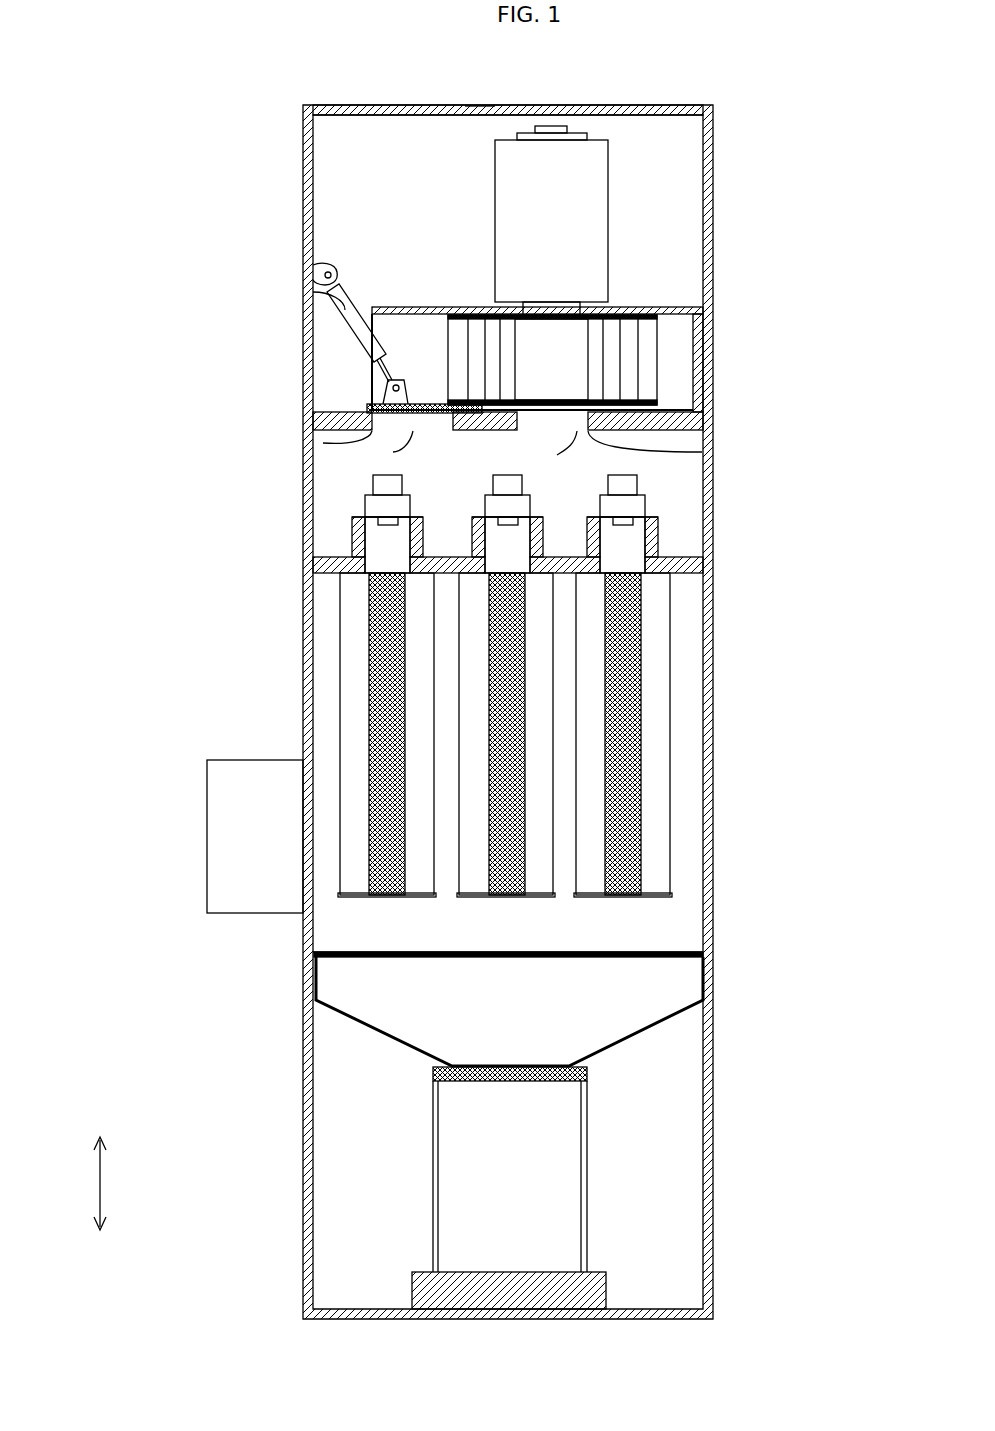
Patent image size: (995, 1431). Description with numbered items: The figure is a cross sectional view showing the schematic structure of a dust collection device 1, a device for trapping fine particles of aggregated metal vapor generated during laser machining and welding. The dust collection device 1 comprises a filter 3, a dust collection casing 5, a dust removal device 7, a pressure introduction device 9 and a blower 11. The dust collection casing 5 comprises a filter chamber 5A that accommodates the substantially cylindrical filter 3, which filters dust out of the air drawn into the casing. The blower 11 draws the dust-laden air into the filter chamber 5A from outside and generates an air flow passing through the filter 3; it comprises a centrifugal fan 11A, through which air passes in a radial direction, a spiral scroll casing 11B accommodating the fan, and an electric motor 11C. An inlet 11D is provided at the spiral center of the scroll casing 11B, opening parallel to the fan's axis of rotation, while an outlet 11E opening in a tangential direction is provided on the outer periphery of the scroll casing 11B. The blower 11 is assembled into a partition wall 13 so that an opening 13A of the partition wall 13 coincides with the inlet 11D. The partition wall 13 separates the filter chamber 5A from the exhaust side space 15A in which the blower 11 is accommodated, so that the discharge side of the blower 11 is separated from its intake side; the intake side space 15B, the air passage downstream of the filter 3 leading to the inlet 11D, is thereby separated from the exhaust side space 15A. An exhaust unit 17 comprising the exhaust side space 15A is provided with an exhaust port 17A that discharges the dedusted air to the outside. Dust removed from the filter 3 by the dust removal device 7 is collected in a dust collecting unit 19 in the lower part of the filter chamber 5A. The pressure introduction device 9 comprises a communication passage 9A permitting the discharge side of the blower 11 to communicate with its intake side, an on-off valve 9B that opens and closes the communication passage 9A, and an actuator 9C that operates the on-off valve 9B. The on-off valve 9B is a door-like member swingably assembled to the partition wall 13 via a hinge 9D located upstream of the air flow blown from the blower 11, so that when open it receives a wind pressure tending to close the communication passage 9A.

The dust collection device 1 is at (247, 233).
The filter 3 is at (340, 605).
The dust collection casing 5 is at (713, 757).
The filter chamber 5A is at (690, 722).
The dust removal device 7 is at (360, 498).
The pressure introduction device 9 is at (343, 372).
The communication passage 9A is at (412, 424).
The on-off valve 9B is at (393, 417).
The actuator 9C is at (333, 323).
The hinge 9D is at (478, 432).
The blower 11 is at (518, 290).
The centrifugal fan 11A is at (657, 353).
The scroll casing 11B is at (680, 307).
The electric motor 11C is at (612, 218).
The inlet 11D is at (565, 437).
The outlet 11E is at (417, 322).
The partition wall 13 is at (563, 422).
The opening 13A is at (565, 455).
The exhaust side space 15A is at (357, 137).
The intake side space 15B is at (425, 465).
The exhaust unit 17 is at (713, 131).
The exhaust port 17A is at (478, 110).
The dust collecting unit 19 is at (663, 952).